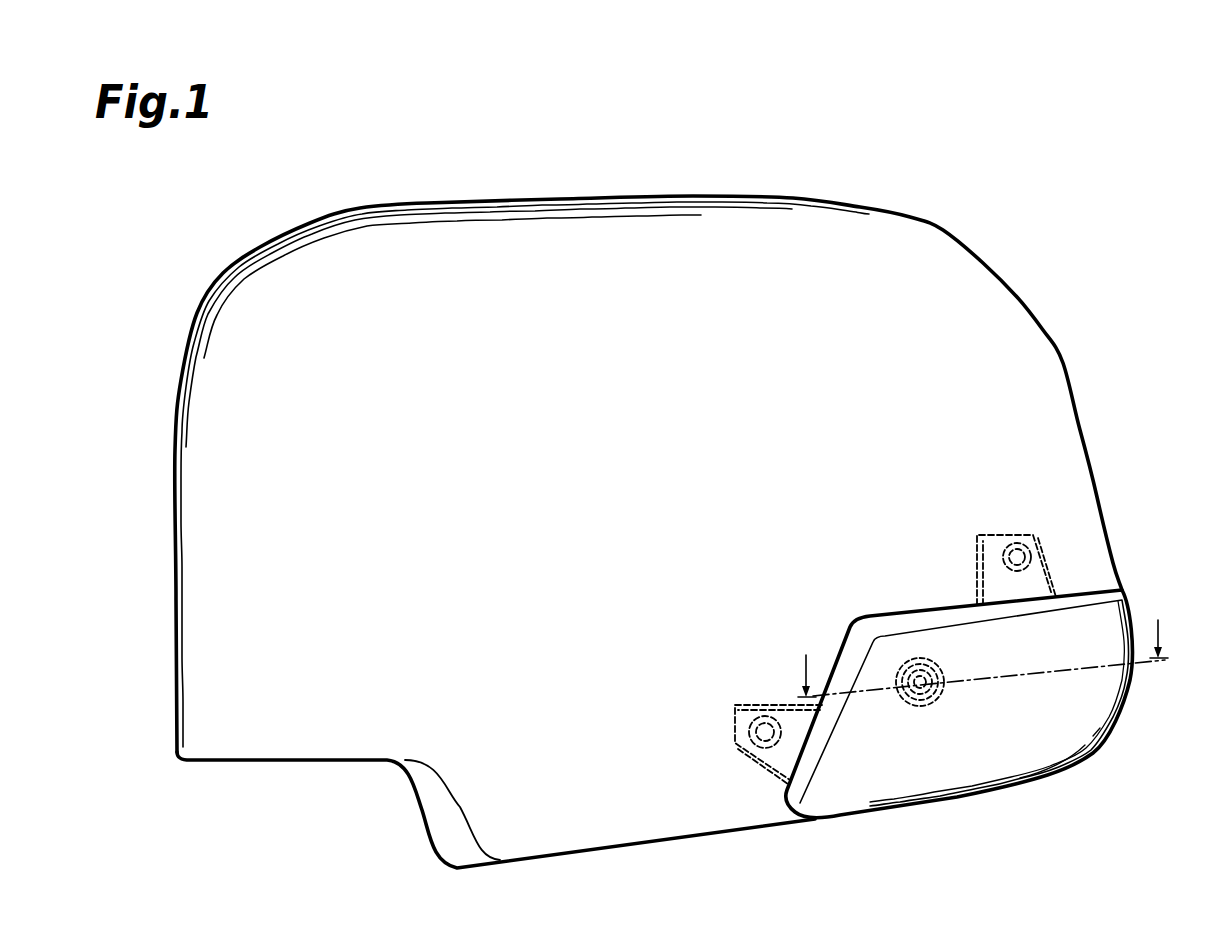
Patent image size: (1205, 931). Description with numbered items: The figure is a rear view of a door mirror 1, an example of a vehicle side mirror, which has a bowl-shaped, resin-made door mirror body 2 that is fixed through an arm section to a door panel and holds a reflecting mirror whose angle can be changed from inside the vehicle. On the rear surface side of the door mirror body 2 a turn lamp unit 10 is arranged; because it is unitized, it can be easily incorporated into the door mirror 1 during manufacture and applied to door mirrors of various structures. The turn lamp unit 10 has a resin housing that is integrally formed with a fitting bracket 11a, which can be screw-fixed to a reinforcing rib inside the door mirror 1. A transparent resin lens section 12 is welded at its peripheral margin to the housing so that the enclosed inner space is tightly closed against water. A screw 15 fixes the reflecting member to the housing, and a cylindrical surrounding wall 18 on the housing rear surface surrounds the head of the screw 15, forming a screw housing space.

The door mirror 1 is at (1034, 203).
The door mirror body 2 is at (1032, 369).
The turn lamp unit 10 is at (826, 582).
The fitting bracket 11a is at (1030, 577).
The lens section 12 is at (960, 776).
The screw 15 is at (917, 700).
The surrounding wall 18 is at (946, 686).